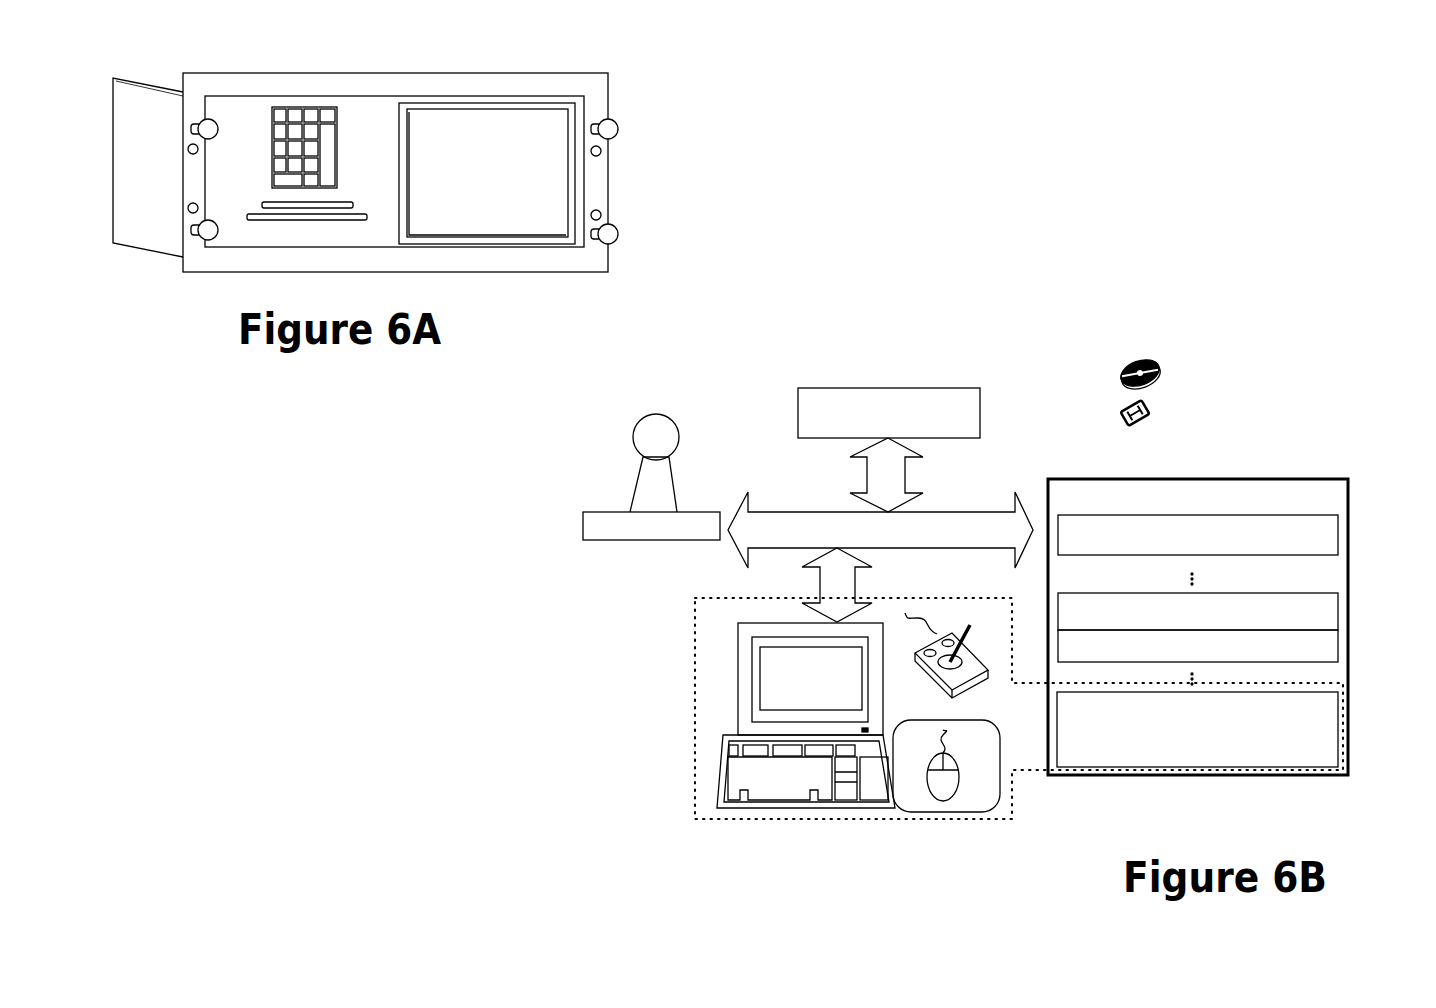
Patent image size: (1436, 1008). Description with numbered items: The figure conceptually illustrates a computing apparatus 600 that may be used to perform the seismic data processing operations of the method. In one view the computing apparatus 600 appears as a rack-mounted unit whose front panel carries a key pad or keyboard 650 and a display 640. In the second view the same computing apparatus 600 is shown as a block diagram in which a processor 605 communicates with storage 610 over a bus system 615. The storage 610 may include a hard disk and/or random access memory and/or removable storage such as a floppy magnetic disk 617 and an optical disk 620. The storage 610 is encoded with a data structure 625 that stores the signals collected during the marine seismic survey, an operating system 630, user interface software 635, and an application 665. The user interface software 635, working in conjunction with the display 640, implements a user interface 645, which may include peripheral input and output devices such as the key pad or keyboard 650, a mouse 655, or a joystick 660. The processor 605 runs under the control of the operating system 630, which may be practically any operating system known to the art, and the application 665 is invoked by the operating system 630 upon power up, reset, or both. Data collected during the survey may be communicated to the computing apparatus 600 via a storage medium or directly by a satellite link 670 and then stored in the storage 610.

In FIG. 6A, the computing apparatus 600 is at (422, 149).
In FIG. 6B, the computing apparatus 600 is at (975, 551).
In FIG. 6B, the processor 605 is at (797, 388).
In FIG. 6B, the storage 610 is at (1238, 608).
In FIG. 6B, the bus system 615 is at (805, 511).
In FIG. 6B, the floppy magnetic disk 617 is at (1157, 413).
In FIG. 6B, the optical disk 620 is at (1162, 365).
In FIG. 6B, the data structure 625 is at (1340, 640).
In FIG. 6B, the operating system 630 is at (1342, 538).
In FIG. 6B, the user interface software 635 is at (1342, 723).
In FIG. 6A, the display 640 is at (536, 110).
In FIG. 6B, the display 640 is at (738, 637).
In FIG. 6B, the user interface 645 is at (697, 820).
In FIG. 6A, the keyboard 650 is at (333, 106).
In FIG. 6B, the keyboard 650 is at (715, 772).
In FIG. 6B, the mouse 655 is at (945, 802).
In FIG. 6B, the joystick 660 is at (932, 633).
In FIG. 6B, the application 665 is at (1340, 613).
In FIG. 6B, the satellite link 670 is at (582, 530).